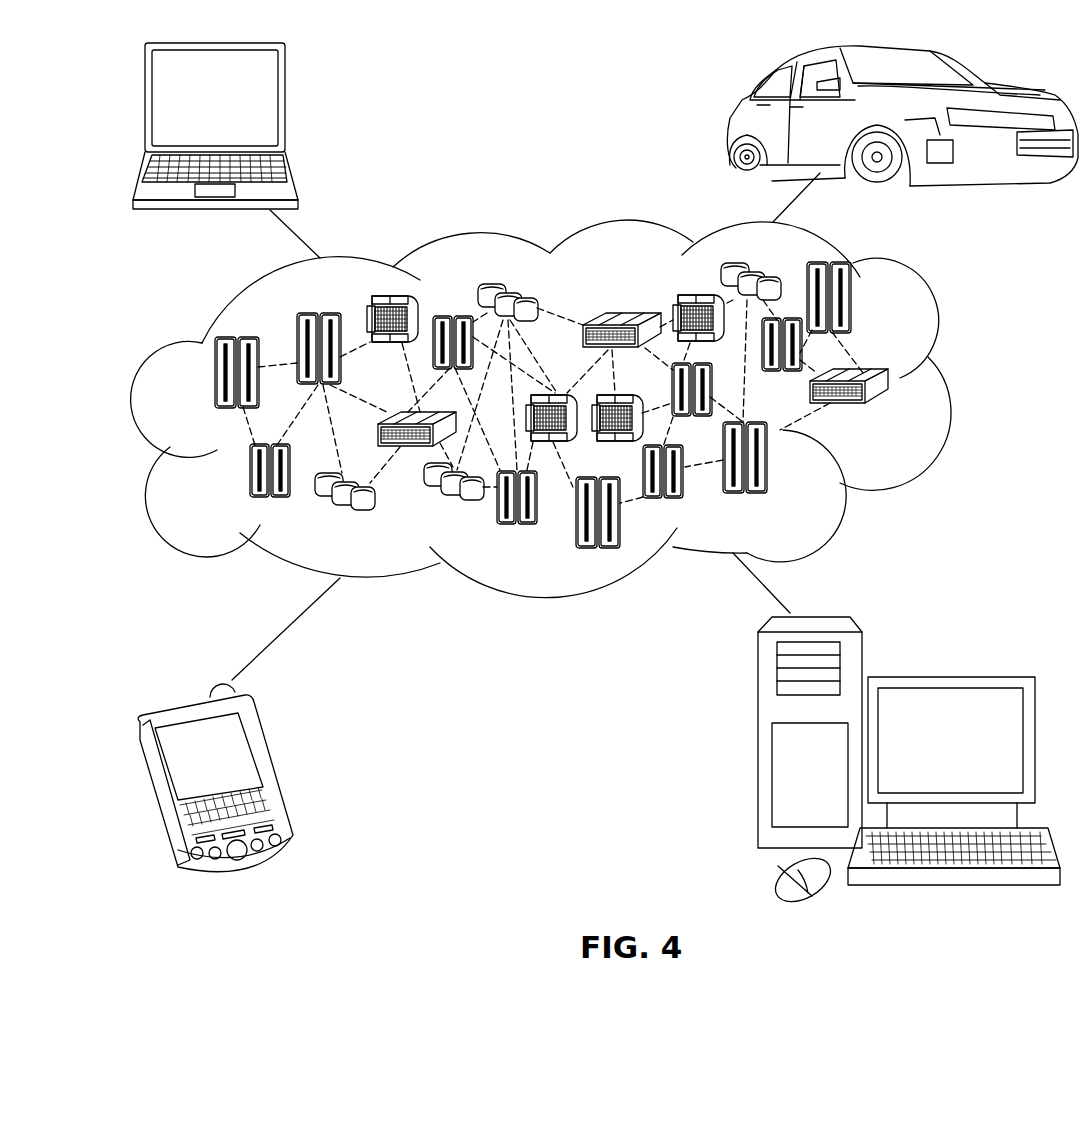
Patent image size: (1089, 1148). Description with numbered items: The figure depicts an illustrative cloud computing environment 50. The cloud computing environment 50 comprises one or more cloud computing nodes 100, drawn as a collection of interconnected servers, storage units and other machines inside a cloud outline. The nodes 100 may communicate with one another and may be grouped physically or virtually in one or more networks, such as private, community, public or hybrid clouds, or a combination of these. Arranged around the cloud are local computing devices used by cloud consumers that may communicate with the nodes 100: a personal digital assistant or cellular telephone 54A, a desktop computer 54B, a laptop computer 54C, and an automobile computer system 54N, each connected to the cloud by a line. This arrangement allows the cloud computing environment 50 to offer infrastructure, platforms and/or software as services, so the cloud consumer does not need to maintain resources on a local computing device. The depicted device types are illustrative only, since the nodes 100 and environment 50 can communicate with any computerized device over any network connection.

The cloud computing environment 50 is at (573, 409).
The cloud computing node 100 is at (908, 417).
The personal digital assistant or cellular telephone 54A is at (273, 770).
The desktop computer 54B is at (948, 673).
The laptop computer 54C is at (286, 106).
The automobile computer system 54N is at (728, 125).